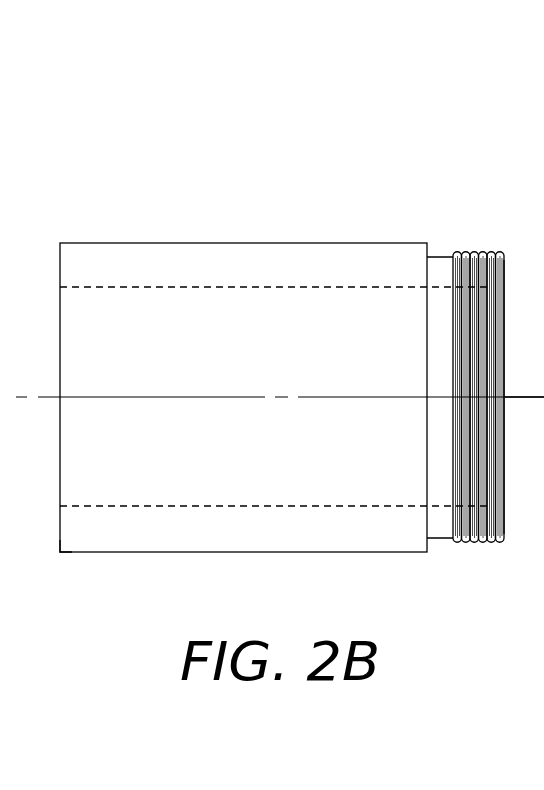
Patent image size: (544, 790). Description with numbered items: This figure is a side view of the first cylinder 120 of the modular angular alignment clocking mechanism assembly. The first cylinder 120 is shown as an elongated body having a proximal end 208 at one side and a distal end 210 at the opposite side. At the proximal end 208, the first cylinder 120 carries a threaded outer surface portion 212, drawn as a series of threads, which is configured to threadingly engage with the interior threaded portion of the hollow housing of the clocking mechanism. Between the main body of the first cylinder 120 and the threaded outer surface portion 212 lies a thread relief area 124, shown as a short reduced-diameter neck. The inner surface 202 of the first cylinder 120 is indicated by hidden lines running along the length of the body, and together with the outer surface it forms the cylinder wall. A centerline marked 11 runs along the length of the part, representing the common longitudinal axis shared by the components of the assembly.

The first cylinder 120 is at (145, 222).
The inner surface 202 is at (265, 288).
The thread relief area 124 is at (435, 268).
The threaded outer surface portion 212 is at (485, 250).
The proximal end 208 is at (504, 520).
The distal end 210 is at (59, 550).
The central axis 11 is at (530, 398).